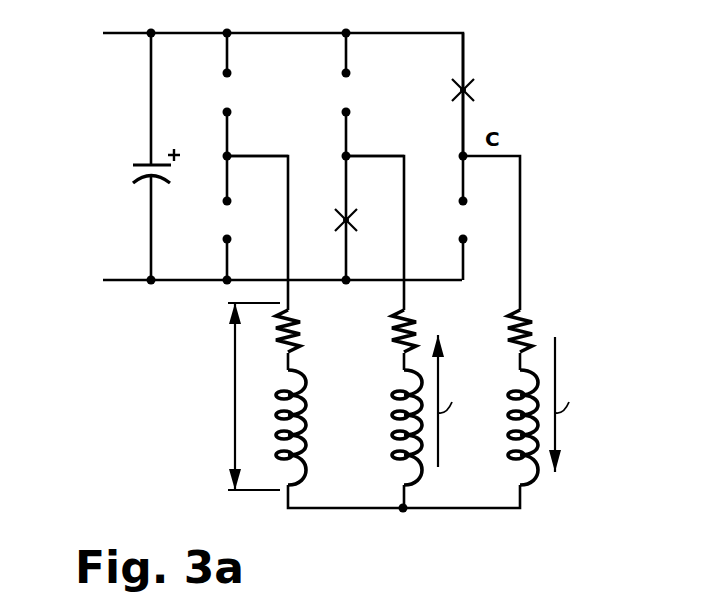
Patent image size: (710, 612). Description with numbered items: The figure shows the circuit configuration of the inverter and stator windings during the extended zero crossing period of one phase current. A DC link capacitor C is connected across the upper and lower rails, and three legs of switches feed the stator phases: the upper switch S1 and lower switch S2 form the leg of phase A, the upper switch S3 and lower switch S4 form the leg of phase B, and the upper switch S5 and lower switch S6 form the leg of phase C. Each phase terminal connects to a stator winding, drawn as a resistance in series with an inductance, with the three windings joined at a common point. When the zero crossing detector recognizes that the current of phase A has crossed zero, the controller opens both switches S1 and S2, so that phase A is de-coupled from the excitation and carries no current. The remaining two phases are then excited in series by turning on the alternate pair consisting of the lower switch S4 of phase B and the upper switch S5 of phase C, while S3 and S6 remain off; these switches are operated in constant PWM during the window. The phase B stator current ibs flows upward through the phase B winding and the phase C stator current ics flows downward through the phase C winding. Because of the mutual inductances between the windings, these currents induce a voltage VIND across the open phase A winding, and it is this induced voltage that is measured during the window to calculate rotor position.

The DC link capacitor C is at (144, 169).
The upper switch of phase A S1 is at (209, 94).
The lower switch of phase A S2 is at (209, 218).
The upper switch of phase B S3 is at (328, 94).
The lower switch of phase B S4 is at (327, 218).
The upper switch of phase C S5 is at (443, 94).
The lower switch of phase C S6 is at (445, 218).
The phase A is at (257, 141).
The phase B is at (375, 141).
The induced voltage VIND is at (252, 396).
The phase B stator current ibs is at (456, 401).
The phase C stator current ics is at (572, 404).